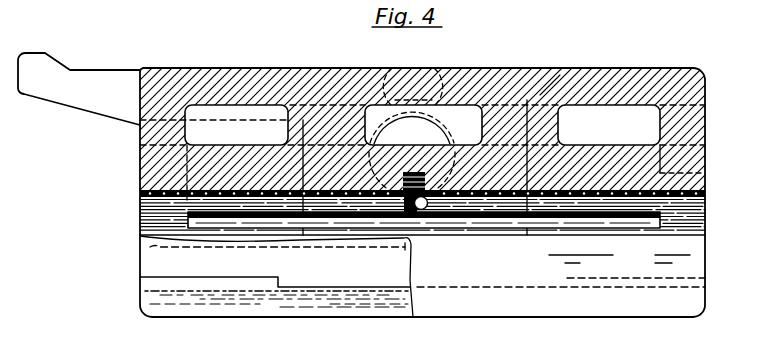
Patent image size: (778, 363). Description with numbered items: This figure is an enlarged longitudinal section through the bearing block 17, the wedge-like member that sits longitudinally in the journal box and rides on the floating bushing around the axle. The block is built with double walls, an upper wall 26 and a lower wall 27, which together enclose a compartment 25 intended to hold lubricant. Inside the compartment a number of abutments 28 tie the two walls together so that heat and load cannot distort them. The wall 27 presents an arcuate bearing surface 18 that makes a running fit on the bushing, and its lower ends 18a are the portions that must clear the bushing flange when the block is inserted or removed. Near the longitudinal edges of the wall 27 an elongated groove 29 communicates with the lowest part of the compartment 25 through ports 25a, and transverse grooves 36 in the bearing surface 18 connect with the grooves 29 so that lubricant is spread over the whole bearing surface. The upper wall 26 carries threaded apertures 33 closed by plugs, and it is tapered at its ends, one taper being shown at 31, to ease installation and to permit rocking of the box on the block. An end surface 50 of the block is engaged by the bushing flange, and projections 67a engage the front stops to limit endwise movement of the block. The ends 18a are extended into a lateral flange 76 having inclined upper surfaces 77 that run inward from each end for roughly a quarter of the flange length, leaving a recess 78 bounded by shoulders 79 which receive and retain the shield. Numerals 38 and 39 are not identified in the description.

The bearing block 17 is at (140, 158).
The arcuate bearing surface 18 is at (707, 203).
The lower ends of the bearing surface 18a is at (553, 306).
The compartment 25 is at (465, 108).
The ports 25a is at (421, 212).
The upper wall 26 is at (550, 87).
The wall 27 is at (598, 152).
The abutments 28 is at (314, 118).
The elongated groove 29 is at (623, 222).
The tapered end of upper wall 31 is at (182, 68).
The threaded apertures 33 is at (427, 66).
The transverse grooves 36 is at (442, 200).
The top edge 38 is at (610, 68).
The upper bore 39 is at (378, 72).
The end surface of the block 50 is at (703, 191).
The projections 67a is at (41, 66).
The lateral flange 76 is at (317, 307).
The inclined upper surfaces 77 is at (235, 286).
The recess 78 is at (321, 288).
The shoulders 79 is at (279, 287).